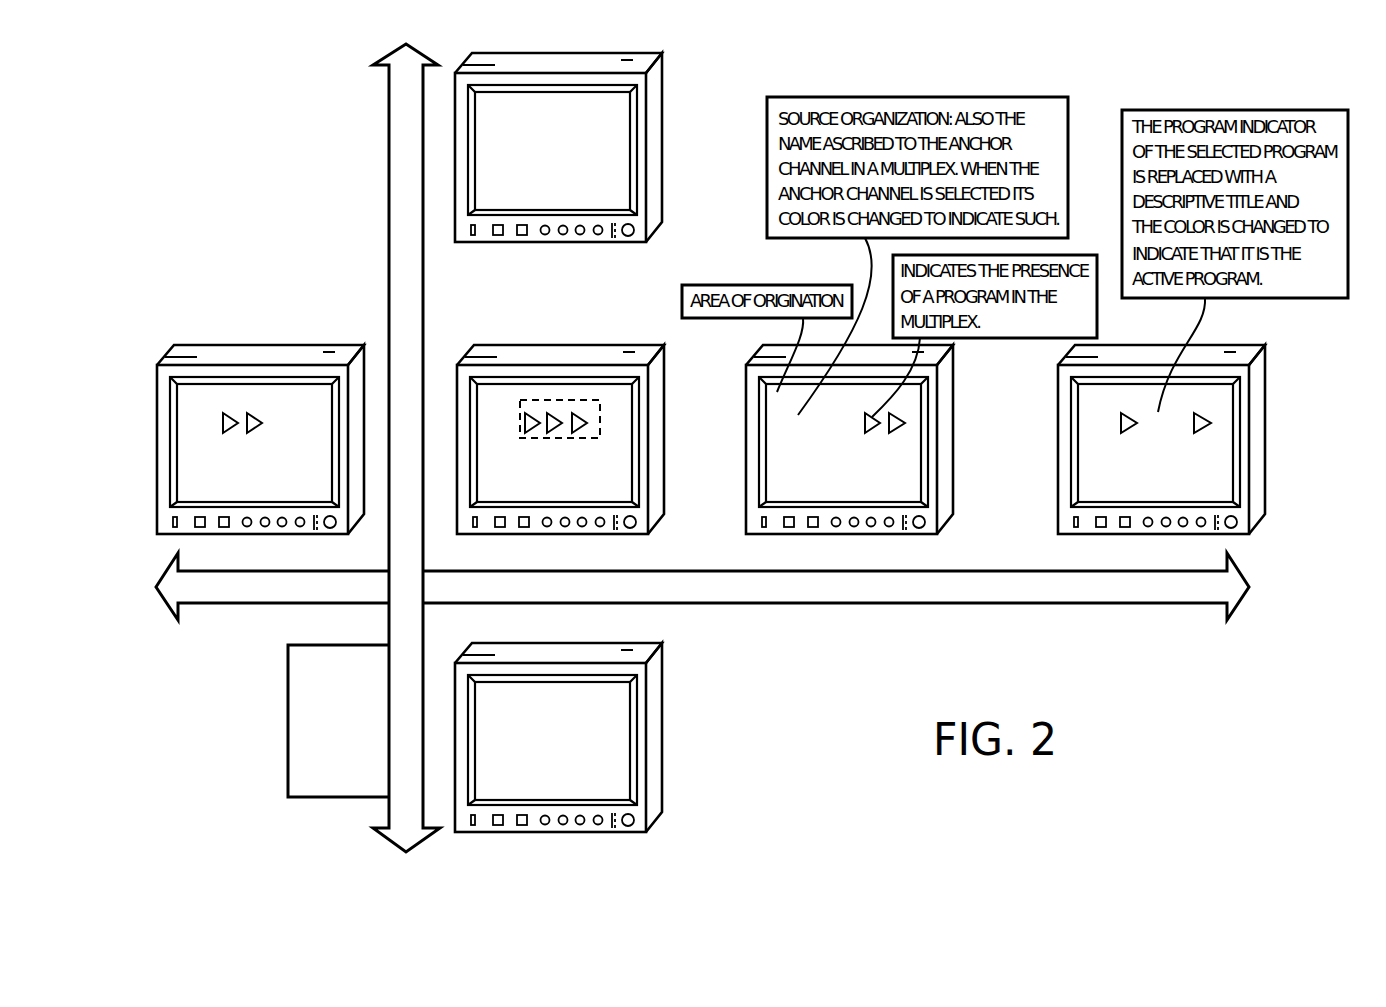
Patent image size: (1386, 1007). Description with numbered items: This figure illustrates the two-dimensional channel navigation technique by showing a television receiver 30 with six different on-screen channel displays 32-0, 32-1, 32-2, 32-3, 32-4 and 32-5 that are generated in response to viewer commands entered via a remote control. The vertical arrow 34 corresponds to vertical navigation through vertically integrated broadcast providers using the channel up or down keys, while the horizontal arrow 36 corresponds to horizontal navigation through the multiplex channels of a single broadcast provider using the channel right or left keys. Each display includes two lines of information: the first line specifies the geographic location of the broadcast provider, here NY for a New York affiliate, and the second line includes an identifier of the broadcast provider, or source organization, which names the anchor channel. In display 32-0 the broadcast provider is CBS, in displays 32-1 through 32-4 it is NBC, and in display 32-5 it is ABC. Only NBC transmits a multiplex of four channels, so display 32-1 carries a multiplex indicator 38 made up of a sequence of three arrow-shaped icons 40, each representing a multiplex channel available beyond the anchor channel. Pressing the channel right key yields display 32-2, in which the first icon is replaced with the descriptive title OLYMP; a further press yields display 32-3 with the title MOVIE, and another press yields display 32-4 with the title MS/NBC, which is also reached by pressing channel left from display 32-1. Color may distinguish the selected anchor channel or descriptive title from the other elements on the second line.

The television receiver 30 is at (655, 202).
The display 32-0 is at (617, 728).
The display 32-1 is at (597, 442).
The display 32-2 is at (908, 492).
The display 32-3 is at (1098, 455).
The display 32-4 is at (188, 470).
The display 32-5 is at (617, 139).
The vertical arrow 34 is at (388, 182).
The horizontal arrow 36 is at (251, 605).
The multiplex indicator 38 is at (545, 442).
The icons 40 is at (582, 430).